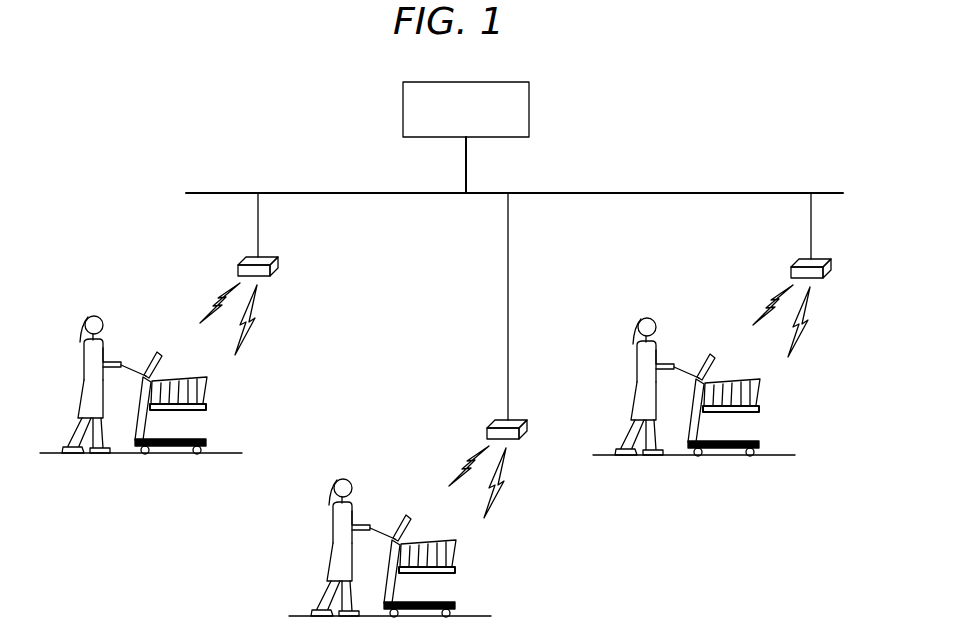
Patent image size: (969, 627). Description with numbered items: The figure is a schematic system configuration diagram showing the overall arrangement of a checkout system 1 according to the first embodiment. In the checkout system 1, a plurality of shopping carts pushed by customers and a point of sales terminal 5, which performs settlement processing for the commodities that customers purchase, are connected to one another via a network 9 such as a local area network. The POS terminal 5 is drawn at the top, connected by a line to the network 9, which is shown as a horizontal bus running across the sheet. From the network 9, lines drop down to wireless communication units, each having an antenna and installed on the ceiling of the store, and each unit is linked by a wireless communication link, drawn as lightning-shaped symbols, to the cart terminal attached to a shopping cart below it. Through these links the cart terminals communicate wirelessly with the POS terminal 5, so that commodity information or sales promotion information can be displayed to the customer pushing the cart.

The checkout system 1 is at (581, 132).
The POS terminal 5 is at (466, 82).
The network 9 is at (316, 193).